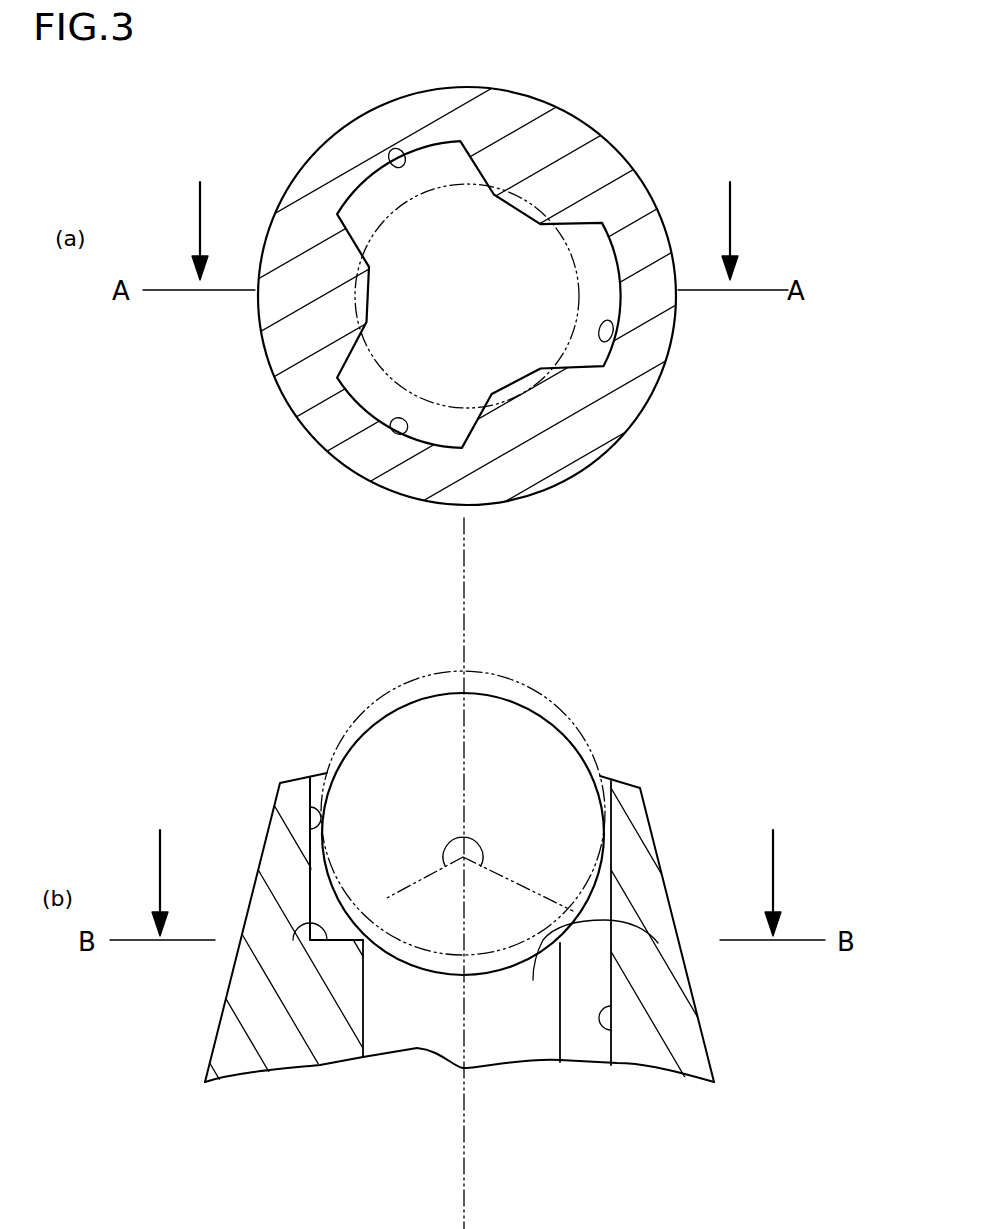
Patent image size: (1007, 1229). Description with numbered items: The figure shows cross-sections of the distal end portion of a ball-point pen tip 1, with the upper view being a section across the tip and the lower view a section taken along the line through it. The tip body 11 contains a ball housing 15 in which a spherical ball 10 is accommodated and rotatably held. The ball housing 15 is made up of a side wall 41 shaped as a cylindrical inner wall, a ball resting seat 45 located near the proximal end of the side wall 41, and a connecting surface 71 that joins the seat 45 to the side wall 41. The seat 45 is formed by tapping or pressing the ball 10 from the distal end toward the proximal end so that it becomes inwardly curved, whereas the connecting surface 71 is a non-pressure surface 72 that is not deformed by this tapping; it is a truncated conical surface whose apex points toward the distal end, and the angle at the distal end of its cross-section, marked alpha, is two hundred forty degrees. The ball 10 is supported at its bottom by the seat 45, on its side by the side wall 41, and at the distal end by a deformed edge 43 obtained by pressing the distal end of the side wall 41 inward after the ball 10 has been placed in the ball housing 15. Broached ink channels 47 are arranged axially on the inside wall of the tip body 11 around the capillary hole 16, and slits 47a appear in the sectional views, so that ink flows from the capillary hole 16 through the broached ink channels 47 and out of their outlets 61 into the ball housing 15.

The ball-point pen tip 1 is at (672, 89).
The ball 10 is at (500, 727).
The tip body 11 is at (608, 162).
The ball housing 15 is at (607, 840).
The capillary hole 16 is at (418, 1048).
The side wall 41 is at (293, 787).
The deformed edge 43 is at (601, 776).
The ball resting seat 45 is at (533, 980).
The broached ink channels 47 is at (602, 270).
The slit of collet sleeve 47a is at (412, 152).
The outlets 61 is at (658, 943).
The connecting surface 71 is at (385, 899).
The non-pressure surface 72 is at (241, 978).